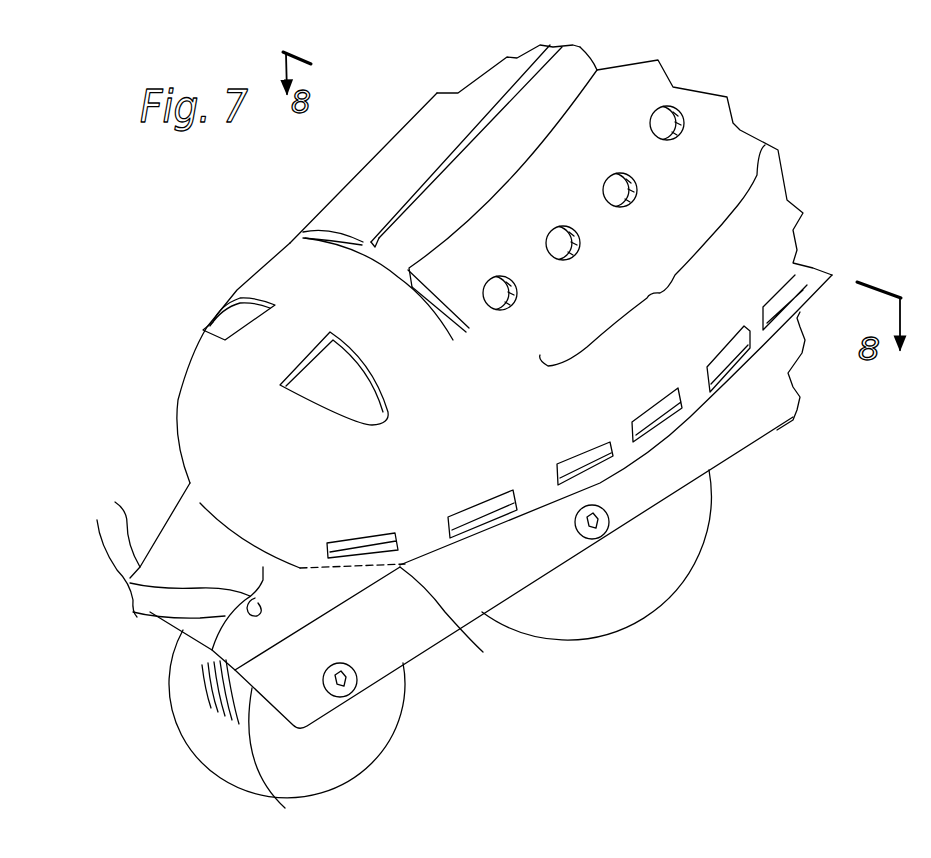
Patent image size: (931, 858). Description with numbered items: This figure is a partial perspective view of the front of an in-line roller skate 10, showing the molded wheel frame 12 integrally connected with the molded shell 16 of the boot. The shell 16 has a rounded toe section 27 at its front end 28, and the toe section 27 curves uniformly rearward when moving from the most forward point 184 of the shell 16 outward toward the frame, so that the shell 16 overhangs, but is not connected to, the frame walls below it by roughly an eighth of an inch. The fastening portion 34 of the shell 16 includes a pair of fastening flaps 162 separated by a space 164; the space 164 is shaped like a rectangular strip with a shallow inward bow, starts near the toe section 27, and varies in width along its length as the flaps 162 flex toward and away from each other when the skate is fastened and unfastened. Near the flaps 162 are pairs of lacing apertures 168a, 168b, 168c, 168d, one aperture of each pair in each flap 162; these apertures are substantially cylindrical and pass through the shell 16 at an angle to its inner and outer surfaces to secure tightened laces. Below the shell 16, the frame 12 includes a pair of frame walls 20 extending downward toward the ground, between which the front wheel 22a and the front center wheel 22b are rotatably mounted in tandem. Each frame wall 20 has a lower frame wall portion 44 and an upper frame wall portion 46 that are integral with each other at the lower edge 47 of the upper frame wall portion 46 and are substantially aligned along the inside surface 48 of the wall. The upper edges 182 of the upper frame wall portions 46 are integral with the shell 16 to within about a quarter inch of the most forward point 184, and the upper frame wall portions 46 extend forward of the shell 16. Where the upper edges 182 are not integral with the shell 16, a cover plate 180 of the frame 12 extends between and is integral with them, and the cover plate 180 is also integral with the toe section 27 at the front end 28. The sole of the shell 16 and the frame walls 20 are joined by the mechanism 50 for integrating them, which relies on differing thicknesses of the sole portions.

The in-line roller skate 10 is at (129, 267).
The wheel frame 12 is at (471, 664).
The shell 16 is at (246, 231).
The frame walls 20 is at (452, 651).
The front wheel 22a is at (363, 762).
The front center wheel 22b is at (692, 505).
The toe section 27 is at (216, 392).
The front end 28 is at (162, 407).
The fastening portion 34 is at (652, 255).
The lower frame wall portion 44 is at (345, 775).
The upper frame wall portion 46 is at (186, 623).
The lower edge 47 is at (456, 617).
The inside surface 48 is at (285, 808).
The mechanism for integrating the sole and the frame walls 50 is at (160, 527).
The fastening flaps 162 is at (473, 96).
The space 164 is at (545, 91).
The lacing aperture 168a is at (329, 206).
The lacing aperture 168b is at (386, 160).
The lacing aperture 168c is at (431, 111).
The lacing aperture 168d is at (668, 139).
The cover plate 180 is at (259, 628).
The upper edges 182 is at (103, 553).
The most forward point 184 is at (212, 359).